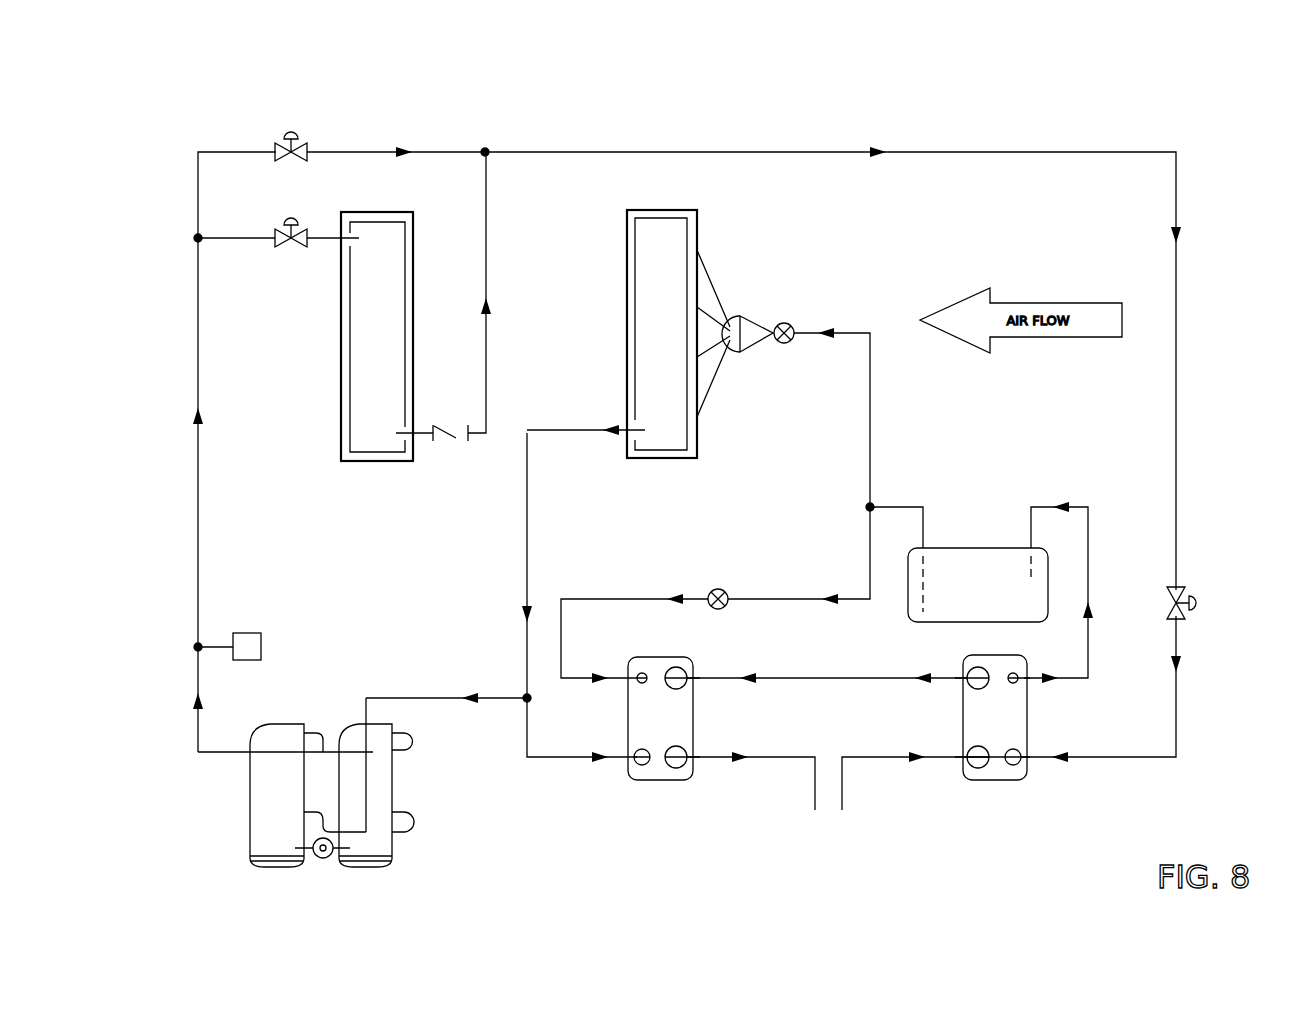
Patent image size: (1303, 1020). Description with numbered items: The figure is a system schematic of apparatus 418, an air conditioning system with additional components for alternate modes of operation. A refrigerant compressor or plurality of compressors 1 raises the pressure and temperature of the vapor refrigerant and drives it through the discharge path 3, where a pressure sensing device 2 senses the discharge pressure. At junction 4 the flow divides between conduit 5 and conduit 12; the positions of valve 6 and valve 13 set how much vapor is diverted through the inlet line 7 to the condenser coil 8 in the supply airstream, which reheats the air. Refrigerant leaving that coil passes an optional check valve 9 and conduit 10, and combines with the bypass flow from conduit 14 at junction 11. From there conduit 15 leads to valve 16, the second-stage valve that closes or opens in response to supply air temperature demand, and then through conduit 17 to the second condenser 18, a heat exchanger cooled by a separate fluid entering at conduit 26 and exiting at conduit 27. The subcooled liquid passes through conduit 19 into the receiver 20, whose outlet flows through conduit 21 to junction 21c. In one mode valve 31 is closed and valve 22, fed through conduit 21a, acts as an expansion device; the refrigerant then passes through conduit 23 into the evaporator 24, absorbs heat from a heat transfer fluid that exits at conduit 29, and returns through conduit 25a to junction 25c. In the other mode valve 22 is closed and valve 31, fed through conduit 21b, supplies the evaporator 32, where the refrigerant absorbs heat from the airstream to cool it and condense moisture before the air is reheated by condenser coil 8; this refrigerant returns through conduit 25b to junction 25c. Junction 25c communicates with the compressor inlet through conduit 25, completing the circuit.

The refrigerant compressor 1 is at (270, 716).
The pressure sensing device 2 is at (254, 622).
The discharge path 3 is at (203, 382).
The junction 4 is at (192, 233).
The conduit 5 is at (233, 228).
The valve 6 is at (282, 250).
The condenser inlet valve 7 is at (318, 230).
The condenser coil 8 is at (389, 208).
The check valve 9 is at (456, 458).
The conduit 10 is at (496, 244).
The junction 11 is at (592, 146).
The conduit 12 is at (213, 144).
The valve 13 is at (312, 138).
The conduit 14 is at (468, 146).
The conduit 15 is at (1007, 148).
The valve 16 is at (1186, 584).
The conduit 17 is at (1180, 740).
The second condenser 18 is at (1032, 736).
The conduit 19 is at (1088, 494).
The receiver 20 is at (975, 542).
The conduit 21 is at (906, 500).
The conduit 21a is at (862, 556).
The conduit 21b is at (862, 424).
The junction 21c is at (858, 498).
The valve 22 is at (730, 588).
The conduit 23 is at (606, 590).
The evaporator 24 is at (697, 740).
The conduit 25 is at (427, 705).
The conduit 25a is at (541, 768).
The conduit 25b is at (520, 590).
The junction 25c is at (520, 691).
The conduit 26 is at (851, 814).
The conduit 27 is at (895, 671).
The conduit 29 is at (808, 814).
The valve 31 is at (802, 320).
The evaporator 32 is at (706, 224).
The apparatus 418 is at (1204, 106).